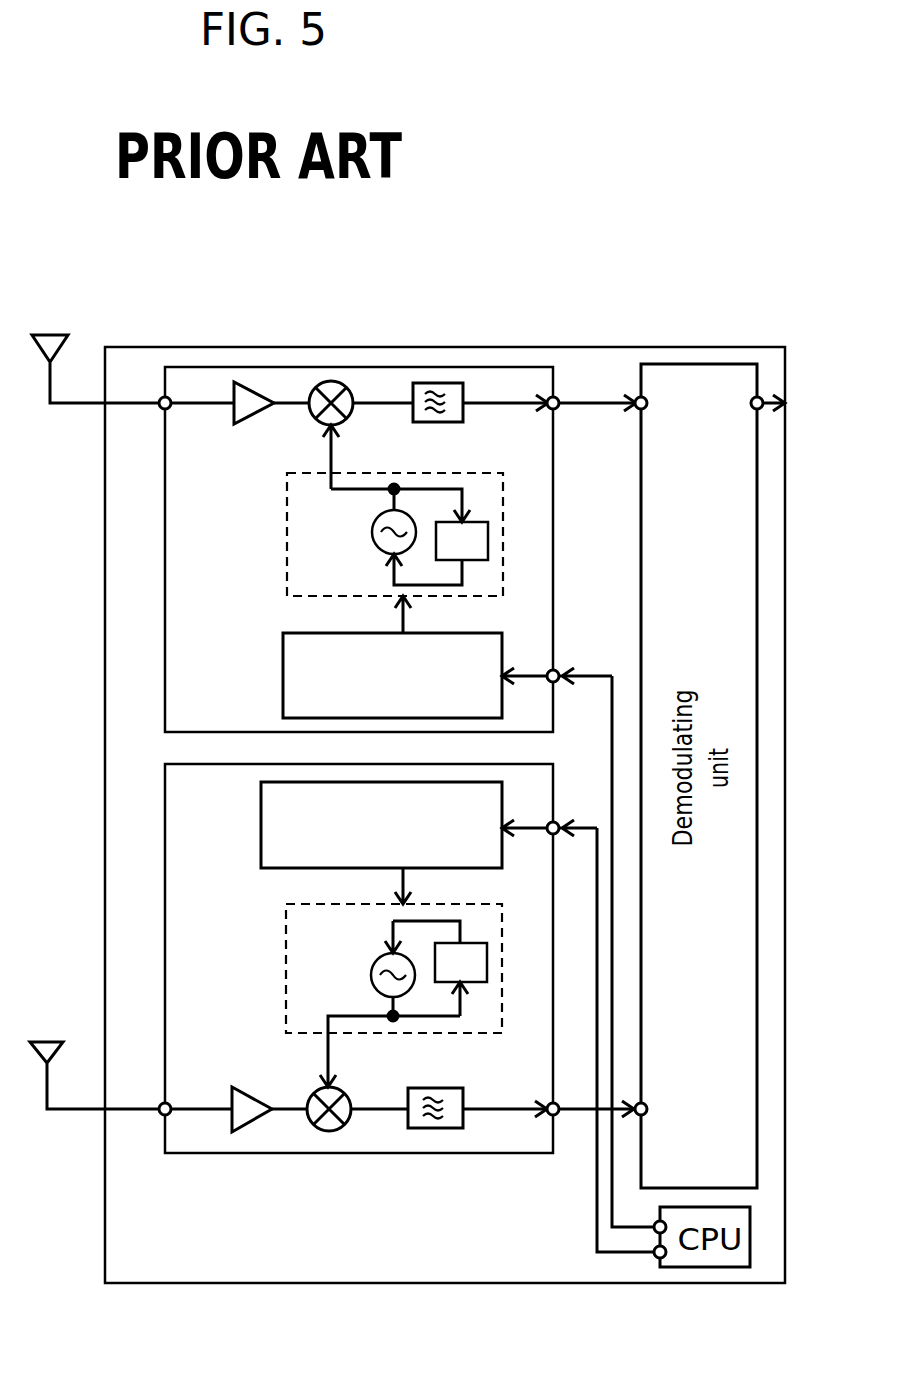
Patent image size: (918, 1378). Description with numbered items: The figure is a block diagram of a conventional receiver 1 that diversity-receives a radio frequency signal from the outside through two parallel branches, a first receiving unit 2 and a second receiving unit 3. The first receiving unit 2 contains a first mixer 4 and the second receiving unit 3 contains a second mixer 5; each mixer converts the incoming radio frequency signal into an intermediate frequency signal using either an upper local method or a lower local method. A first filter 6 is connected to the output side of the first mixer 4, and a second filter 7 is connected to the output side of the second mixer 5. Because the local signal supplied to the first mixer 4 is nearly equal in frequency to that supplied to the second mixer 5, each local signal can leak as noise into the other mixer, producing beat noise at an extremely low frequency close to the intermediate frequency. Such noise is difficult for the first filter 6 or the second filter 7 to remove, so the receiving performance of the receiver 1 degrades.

The conventional receiver 1 is at (723, 330).
The first receiving unit 2 is at (388, 367).
The second receiving unit 3 is at (380, 1153).
The first mixer 4 is at (331, 380).
The second mixer 5 is at (331, 1132).
The first filter 6 is at (437, 383).
The second filter 7 is at (433, 1128).